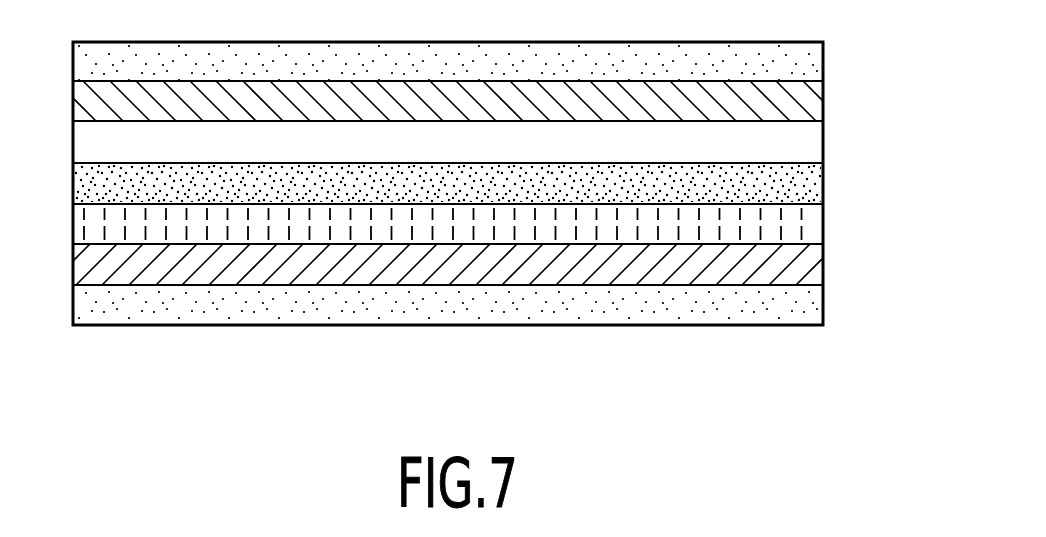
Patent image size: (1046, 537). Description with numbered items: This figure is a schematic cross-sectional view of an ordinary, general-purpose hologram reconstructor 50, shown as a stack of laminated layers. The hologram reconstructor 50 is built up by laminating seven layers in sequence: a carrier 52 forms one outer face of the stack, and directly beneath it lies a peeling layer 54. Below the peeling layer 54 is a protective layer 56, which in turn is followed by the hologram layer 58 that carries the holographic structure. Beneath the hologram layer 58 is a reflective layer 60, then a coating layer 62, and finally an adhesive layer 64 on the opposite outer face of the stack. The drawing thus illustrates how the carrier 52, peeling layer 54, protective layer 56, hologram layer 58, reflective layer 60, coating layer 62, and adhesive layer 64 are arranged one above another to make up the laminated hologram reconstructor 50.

The hologram reconstructor 50 is at (422, 378).
The carrier 52 is at (678, 63).
The peeling layer 54 is at (820, 108).
The protective layer 56 is at (820, 148).
The hologram layer 58 is at (805, 184).
The reflective layer 60 is at (812, 223).
The coating layer 62 is at (817, 270).
The adhesive layer 64 is at (677, 307).